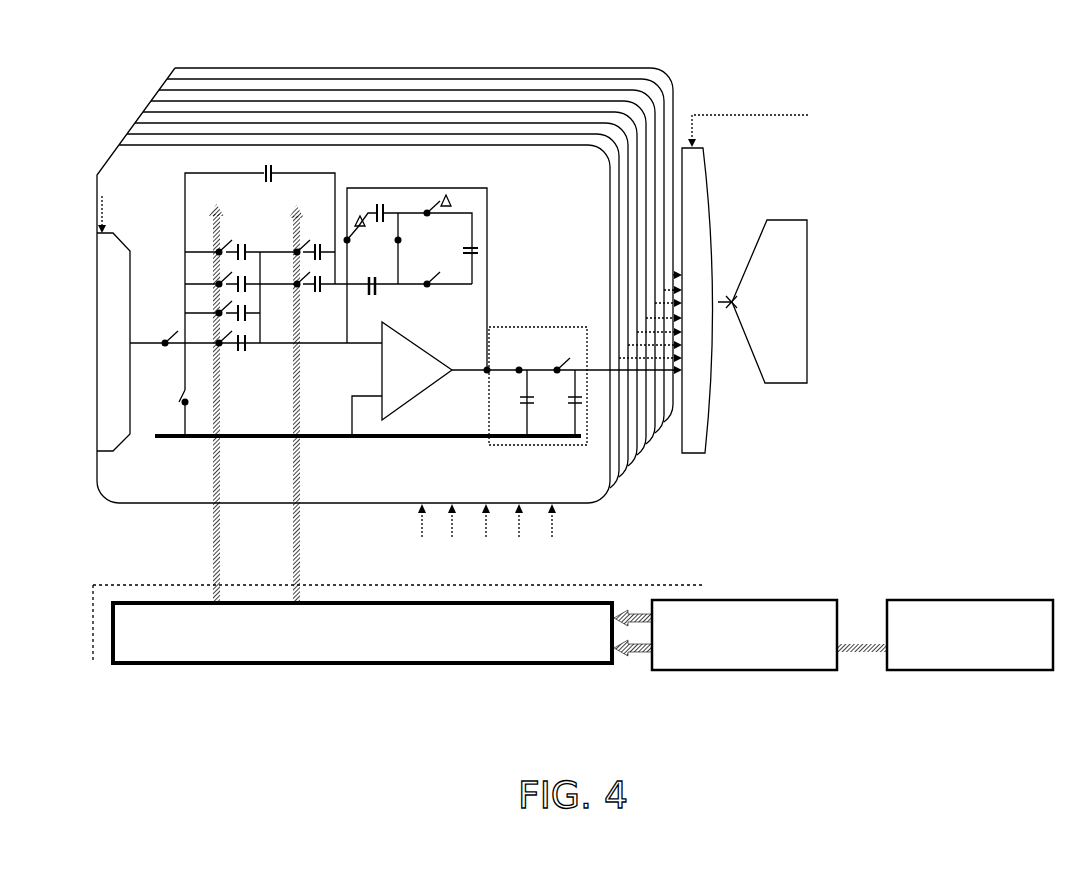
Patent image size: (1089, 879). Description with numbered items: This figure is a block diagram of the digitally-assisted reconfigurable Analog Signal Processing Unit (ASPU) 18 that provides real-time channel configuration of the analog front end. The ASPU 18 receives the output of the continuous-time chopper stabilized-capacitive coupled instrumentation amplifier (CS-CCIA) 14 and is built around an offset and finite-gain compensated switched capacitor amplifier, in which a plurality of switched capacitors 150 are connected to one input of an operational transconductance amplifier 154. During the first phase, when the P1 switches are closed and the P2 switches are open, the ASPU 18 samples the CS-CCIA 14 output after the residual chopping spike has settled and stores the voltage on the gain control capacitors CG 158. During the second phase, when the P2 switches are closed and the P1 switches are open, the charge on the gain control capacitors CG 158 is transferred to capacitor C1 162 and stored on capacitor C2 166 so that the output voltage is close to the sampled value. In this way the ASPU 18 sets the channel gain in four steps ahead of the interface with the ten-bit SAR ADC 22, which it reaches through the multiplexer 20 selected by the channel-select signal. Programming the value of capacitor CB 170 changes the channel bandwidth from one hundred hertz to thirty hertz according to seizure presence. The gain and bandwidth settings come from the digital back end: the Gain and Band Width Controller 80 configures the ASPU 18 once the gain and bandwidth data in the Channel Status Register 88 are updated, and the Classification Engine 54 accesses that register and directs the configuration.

The Analog Signal Processing Unit 18 is at (162, 48).
The capacitor C2 166 is at (535, 240).
The chopper stabilized-capacitive coupled instrumentation amplifier 14 is at (110, 428).
The switched capacitors 150 is at (238, 212).
The gain control capacitors CG 158 is at (249, 352).
The capacitor CB 170 is at (323, 193).
The capacitor C1 162 is at (382, 258).
The operational transconductance amplifier 154 is at (408, 405).
The multiplexer cell 20 is at (696, 427).
The SAR ADC cell 22 is at (798, 375).
The Gain and Band Width Controller 80 is at (503, 664).
The Channel Status Register 88 is at (755, 672).
The Classification Engine cell 54 is at (1028, 654).